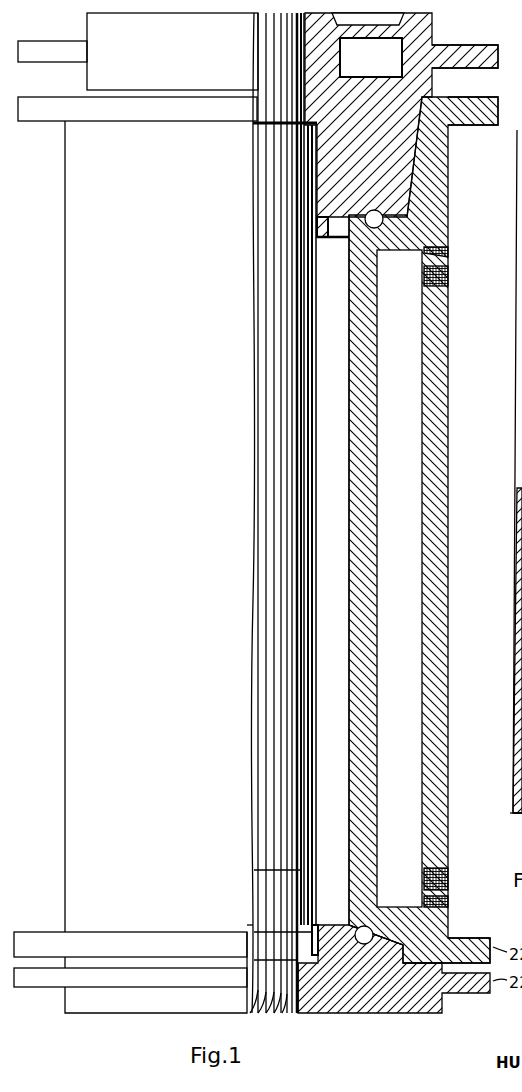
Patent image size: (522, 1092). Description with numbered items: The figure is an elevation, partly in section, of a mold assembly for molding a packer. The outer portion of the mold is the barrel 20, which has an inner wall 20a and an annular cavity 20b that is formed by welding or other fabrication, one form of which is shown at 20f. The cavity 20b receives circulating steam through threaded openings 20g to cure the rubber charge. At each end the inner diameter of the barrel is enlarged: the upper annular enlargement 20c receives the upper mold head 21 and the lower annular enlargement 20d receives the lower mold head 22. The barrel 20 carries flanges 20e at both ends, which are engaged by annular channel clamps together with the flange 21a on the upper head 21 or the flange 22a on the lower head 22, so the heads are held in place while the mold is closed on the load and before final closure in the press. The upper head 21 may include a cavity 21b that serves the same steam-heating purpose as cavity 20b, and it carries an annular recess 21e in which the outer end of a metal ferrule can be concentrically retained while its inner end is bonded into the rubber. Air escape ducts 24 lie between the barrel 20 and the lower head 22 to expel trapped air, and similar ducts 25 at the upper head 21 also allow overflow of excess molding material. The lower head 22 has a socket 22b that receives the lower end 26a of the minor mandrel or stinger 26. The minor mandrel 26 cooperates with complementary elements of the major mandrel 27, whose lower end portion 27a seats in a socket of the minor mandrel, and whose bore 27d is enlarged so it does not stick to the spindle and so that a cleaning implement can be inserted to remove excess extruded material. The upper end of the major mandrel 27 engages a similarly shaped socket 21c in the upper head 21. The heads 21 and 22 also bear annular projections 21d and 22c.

The barrel 20 is at (78, 423).
The inner wall 20a is at (352, 307).
The annular cavity 20b is at (400, 309).
The upper annular enlargement 20c is at (427, 157).
The lower annular enlargement 20d is at (495, 931).
The flange 20e is at (65, 83).
The fabricated cavity wall 20f is at (495, 254).
The threaded opening 20g is at (496, 283).
The upper mold head 21 is at (420, 32).
The flange 21a is at (63, 25).
The cavity 21b is at (390, 68).
The socket 21c is at (307, 58).
The annular projection 21d is at (335, 240).
The annular recess 21e is at (317, 233).
The lower mold head 22 is at (420, 1013).
The flange 22a is at (253, 923).
The socket 22b is at (312, 990).
The annular projection 22c is at (343, 925).
The air escape duct 24 is at (378, 940).
The duct 25 is at (380, 212).
The minor mandrel 26 is at (262, 879).
The lower end 26a is at (282, 1013).
The major mandrel 27 is at (278, 443).
The lower end portion 27a is at (521, 840).
The enlarged bore 27d is at (521, 478).